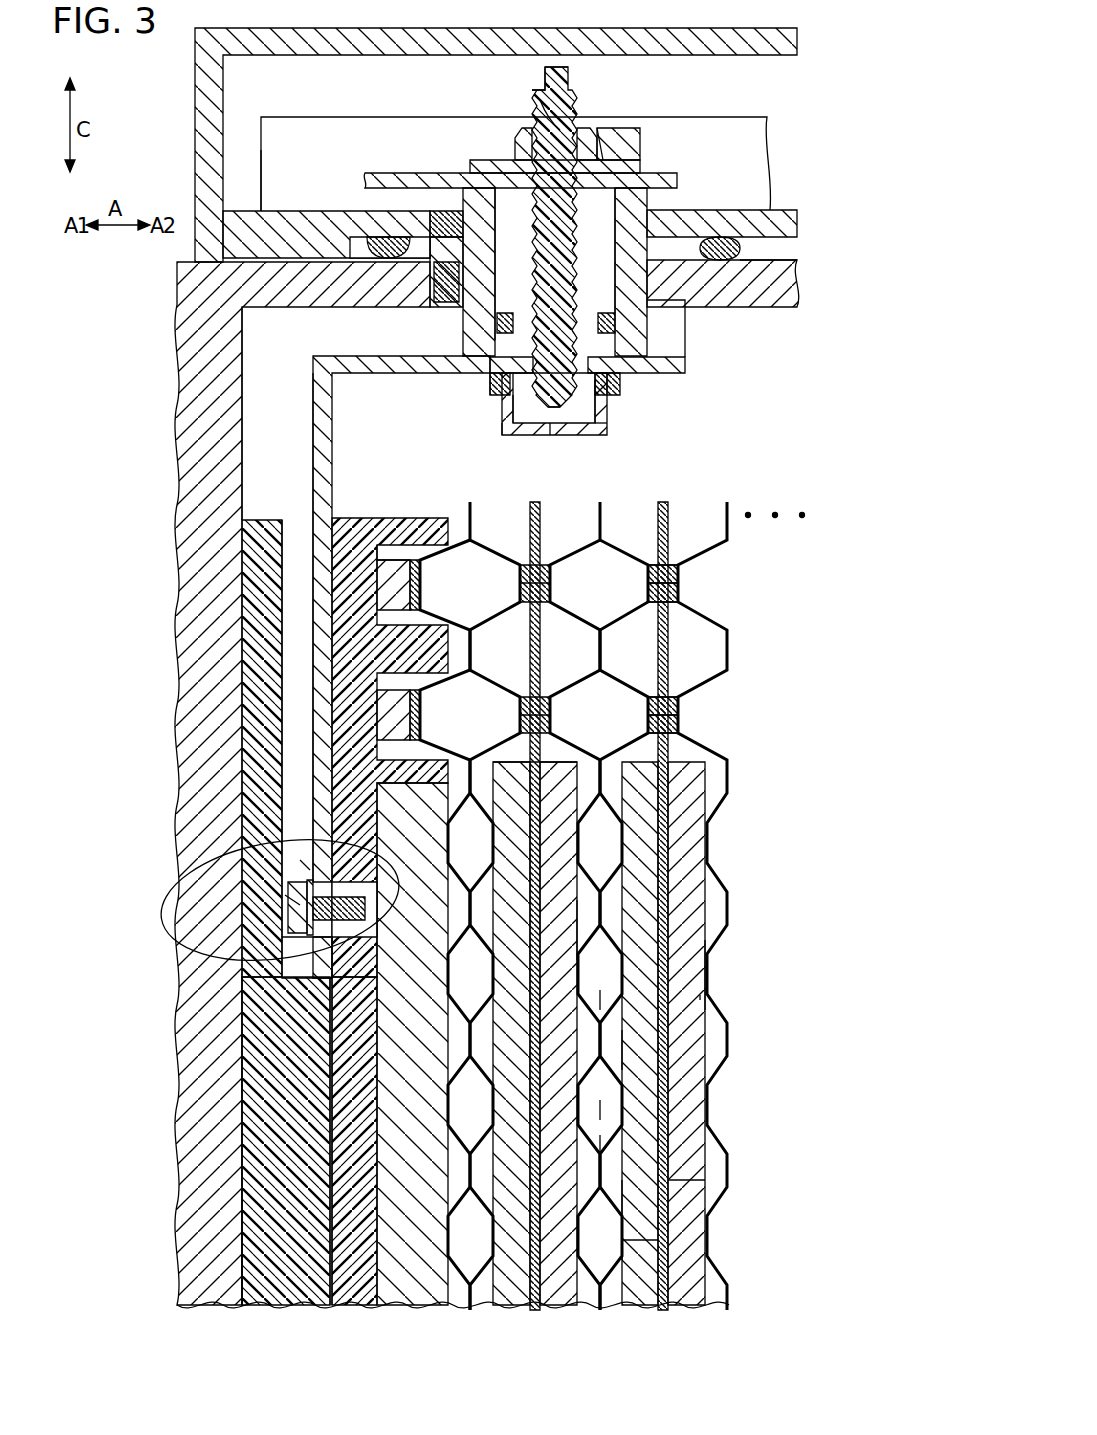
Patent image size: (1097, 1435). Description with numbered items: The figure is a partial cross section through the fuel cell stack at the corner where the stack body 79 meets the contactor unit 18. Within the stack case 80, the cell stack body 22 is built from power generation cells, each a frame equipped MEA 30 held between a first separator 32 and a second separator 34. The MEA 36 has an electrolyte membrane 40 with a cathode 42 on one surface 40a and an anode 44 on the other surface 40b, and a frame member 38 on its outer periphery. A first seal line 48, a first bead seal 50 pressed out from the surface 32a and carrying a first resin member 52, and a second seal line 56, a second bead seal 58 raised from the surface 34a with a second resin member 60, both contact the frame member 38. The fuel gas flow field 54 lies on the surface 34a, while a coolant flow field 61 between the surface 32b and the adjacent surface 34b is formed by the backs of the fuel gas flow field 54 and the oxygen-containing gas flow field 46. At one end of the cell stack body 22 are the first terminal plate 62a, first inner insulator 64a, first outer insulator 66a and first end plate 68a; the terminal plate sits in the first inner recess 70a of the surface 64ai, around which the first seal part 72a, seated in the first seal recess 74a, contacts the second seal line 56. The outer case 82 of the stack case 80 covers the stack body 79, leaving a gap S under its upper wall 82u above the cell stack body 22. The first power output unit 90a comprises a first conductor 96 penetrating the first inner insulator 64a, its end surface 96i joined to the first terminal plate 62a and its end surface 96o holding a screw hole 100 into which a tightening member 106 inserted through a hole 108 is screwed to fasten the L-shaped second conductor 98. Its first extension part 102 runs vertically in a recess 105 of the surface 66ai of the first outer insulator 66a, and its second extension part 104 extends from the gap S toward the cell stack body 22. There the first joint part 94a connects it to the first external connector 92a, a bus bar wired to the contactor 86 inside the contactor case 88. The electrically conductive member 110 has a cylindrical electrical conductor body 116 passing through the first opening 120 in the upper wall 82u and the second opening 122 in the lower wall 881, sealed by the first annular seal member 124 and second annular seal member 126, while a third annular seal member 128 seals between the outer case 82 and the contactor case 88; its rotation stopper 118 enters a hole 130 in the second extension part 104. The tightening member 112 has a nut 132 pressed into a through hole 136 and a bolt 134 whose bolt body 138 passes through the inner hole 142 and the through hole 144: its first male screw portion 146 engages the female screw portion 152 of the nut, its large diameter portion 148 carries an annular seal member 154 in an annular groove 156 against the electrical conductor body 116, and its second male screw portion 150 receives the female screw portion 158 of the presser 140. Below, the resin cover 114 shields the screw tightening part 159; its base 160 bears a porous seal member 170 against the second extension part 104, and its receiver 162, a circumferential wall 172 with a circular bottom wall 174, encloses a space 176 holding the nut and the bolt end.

The contactor unit 18 is at (265, 28).
The contactor case 88 is at (396, 40).
The contactor 86 is at (293, 125).
The lower wall 881 is at (286, 213).
The first opening 120 is at (440, 295).
The second opening 122 is at (444, 215).
The stack case 80 is at (172, 292).
The first power output unit 90a is at (295, 412).
The first external connector 92a is at (680, 180).
The presser 140 is at (632, 166).
The inner hole 142 is at (605, 190).
The second male screw portion 150 is at (520, 145).
The first joint part 94a is at (603, 125).
The tightening member 112 is at (575, 86).
The bolt body 138 is at (560, 66).
The bolt 134 is at (538, 96).
The female screw portion 158 is at (545, 110).
The electrical conductor body 116 is at (476, 337).
The first annular seal member 124 is at (650, 300).
The through hole 144 is at (518, 190).
The large diameter portion 148 is at (588, 300).
The annular groove 156 is at (503, 300).
The annular seal member 154 is at (614, 325).
The hole 130 is at (687, 365).
The electrically conductive member 110 is at (660, 340).
The cover 114 is at (622, 400).
The first male screw portion 146 is at (600, 410).
The rotation stopper 118 is at (650, 375).
The seal member 170 is at (488, 382).
The circumferential wall 172 is at (505, 405).
The base 160 is at (492, 395).
The nut 132 is at (502, 425).
The through hole 136 is at (515, 440).
The receiver 162 is at (600, 436).
The bottom wall 174 is at (572, 438).
The screw tightening part 159 is at (542, 435).
The second annular seal member 126 is at (668, 222).
The third annular seal member 128 is at (742, 250).
The outer case 82 is at (802, 305).
The upper wall 82u is at (782, 290).
The second extension part 104 is at (345, 364).
The recess 105 is at (295, 545).
The first extension part 102 is at (262, 580).
The second conductor 98 is at (312, 690).
The surface 64ai is at (428, 548).
The first seal part 72a is at (420, 588).
The first seal recess 74a is at (395, 525).
The tightening member 106 is at (285, 915).
The hole 108 is at (305, 905).
The first conductor 96 is at (290, 860).
The end surface 96i is at (300, 865).
The end surface 96o is at (290, 895).
The screw hole 100 is at (300, 965).
The first outer insulator 66a is at (265, 1155).
The first end plate 68a is at (228, 1120).
The surface 66ai is at (330, 1075).
The first inner insulator 64a is at (355, 1180).
The first inner recess 70a is at (330, 1205).
The stack body 79 is at (240, 1240).
The first terminal plate 62a is at (400, 1280).
The female screw portion 152 is at (541, 500).
The space 176 is at (601, 503).
The frame member 38 is at (668, 515).
The first bead seal 50 is at (678, 578).
The first resin member 52 is at (678, 595).
The first seal line 48 is at (800, 565).
The second bead seal 58 is at (678, 710).
The second resin member 60 is at (678, 725).
The second seal line 56 is at (800, 698).
The frame equipped MEA 30 is at (712, 1290).
The cell stack body 22 is at (755, 490).
The gap S is at (700, 465).
The second separator 34 is at (730, 890).
The surface 34a is at (708, 848).
The surface 34b is at (708, 918).
The electrolyte membrane 40 is at (668, 1222).
The surface 40a is at (708, 980).
The surface 40b is at (708, 948).
The coolant flow field 61 is at (708, 998).
The first separator 32 is at (612, 1000).
The oxygen-containing gas flow field 46 is at (625, 1040).
The fuel gas flow field 54 is at (625, 1058).
The surface 32a is at (612, 1110).
The surface 32b is at (612, 1143).
The anode 44 is at (692, 1187).
The cathode 42 is at (648, 1246).
The MEA 36 is at (810, 1183).